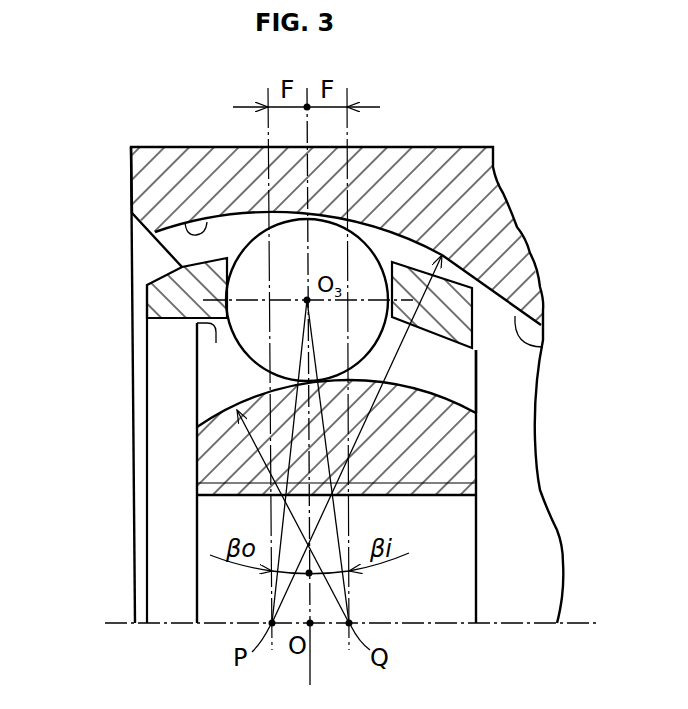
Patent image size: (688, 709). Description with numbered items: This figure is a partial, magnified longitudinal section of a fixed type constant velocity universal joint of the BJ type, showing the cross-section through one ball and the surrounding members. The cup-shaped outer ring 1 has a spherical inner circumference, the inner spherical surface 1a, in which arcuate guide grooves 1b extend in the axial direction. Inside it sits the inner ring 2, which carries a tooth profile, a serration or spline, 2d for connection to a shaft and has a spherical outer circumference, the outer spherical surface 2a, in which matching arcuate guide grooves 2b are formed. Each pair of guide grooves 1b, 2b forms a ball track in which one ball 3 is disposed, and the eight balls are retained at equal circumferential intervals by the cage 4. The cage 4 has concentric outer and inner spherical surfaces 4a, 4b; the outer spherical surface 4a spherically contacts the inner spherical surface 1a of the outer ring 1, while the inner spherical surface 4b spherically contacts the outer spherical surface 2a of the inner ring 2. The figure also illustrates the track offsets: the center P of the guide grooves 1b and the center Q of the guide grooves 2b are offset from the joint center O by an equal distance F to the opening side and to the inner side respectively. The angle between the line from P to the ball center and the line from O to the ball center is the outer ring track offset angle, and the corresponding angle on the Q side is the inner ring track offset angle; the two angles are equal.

The outer ring 1 is at (427, 160).
The inner spherical surface 1a is at (518, 330).
The guide grooves 1b is at (186, 222).
The inner ring 2 is at (337, 473).
The outer spherical surface 2a is at (474, 342).
The guide grooves 2b is at (244, 391).
The tooth profile 2d is at (228, 497).
The balls 3 is at (258, 248).
The cage 4 is at (337, 385).
The outer spherical surface 4a is at (483, 263).
The inner spherical surface 4b is at (200, 336).